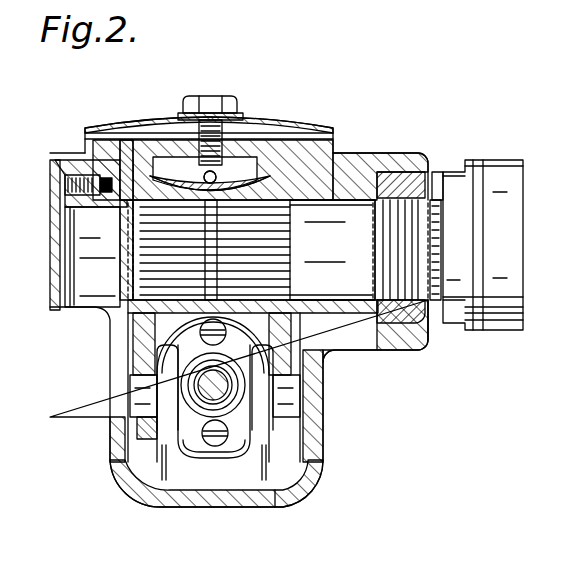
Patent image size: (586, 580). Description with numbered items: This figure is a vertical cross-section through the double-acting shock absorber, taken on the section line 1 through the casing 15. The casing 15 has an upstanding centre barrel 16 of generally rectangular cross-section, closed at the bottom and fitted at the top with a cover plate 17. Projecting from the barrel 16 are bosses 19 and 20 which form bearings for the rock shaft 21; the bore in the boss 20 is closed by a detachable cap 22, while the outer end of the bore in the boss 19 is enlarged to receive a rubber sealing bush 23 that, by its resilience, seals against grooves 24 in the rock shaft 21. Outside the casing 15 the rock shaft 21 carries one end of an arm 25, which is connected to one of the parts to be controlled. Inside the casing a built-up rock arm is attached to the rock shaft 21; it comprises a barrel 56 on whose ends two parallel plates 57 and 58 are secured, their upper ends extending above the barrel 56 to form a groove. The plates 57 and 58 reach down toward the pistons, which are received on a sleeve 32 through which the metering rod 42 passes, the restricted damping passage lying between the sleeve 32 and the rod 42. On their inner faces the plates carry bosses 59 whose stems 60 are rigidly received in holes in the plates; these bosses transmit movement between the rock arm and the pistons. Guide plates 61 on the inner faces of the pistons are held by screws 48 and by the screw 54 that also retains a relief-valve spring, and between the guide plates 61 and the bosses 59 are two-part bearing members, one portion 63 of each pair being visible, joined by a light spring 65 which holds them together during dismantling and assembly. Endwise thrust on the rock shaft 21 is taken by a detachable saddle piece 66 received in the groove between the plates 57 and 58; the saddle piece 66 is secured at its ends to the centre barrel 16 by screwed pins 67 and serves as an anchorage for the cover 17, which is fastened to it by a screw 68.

The section line 1 is at (210, 96).
The casing 15 is at (275, 492).
The centre barrel 16 is at (118, 345).
The cover plate 17 is at (235, 165).
The boss 19 is at (402, 330).
The boss 20 is at (95, 307).
The rock shaft 21 is at (348, 208).
The detachable cap 22 is at (62, 247).
The sealing bush 23 is at (432, 325).
The grooves 24 is at (440, 200).
The arm 25 is at (513, 318).
The sleeve 32 is at (322, 345).
The metering rod 42 is at (312, 380).
The screws 48 is at (218, 443).
The screw 54 is at (196, 335).
The barrel 56 is at (305, 165).
The plate 57 is at (135, 152).
The plate 58 is at (320, 175).
The bosses 59 is at (155, 420).
The stems 60 is at (135, 412).
The guide plates 61 is at (193, 432).
The bearing member portion 63 is at (165, 448).
The light spring 65 is at (178, 475).
The saddle piece 66 is at (172, 142).
The screwed pins 67 is at (250, 165).
The screw 68 is at (218, 96).